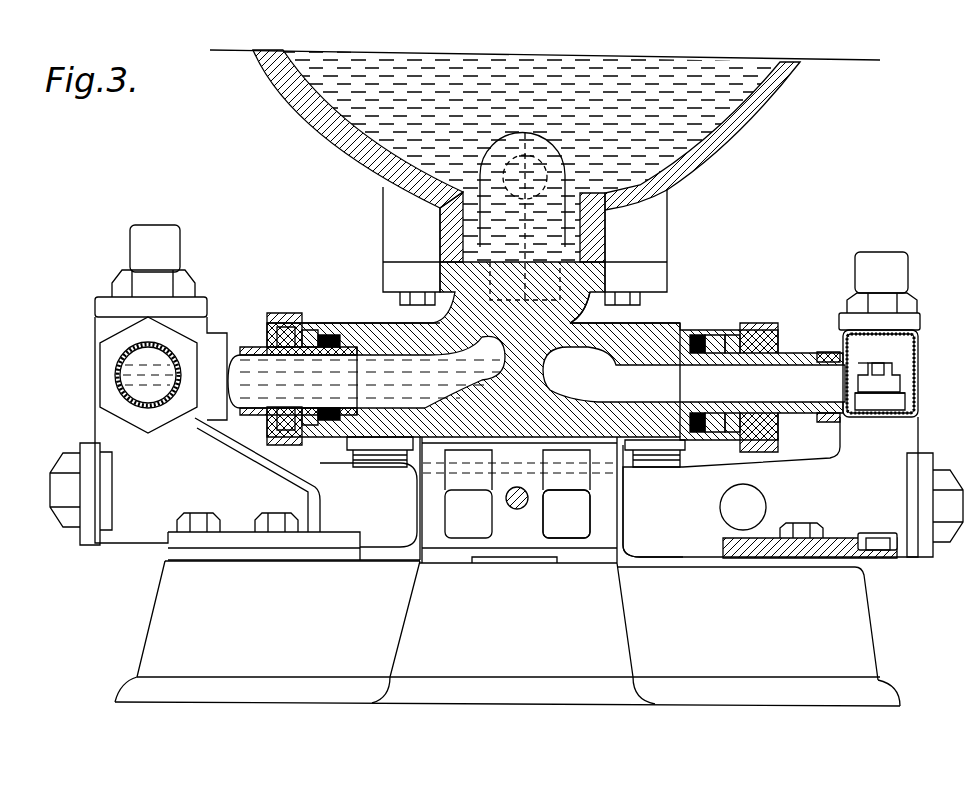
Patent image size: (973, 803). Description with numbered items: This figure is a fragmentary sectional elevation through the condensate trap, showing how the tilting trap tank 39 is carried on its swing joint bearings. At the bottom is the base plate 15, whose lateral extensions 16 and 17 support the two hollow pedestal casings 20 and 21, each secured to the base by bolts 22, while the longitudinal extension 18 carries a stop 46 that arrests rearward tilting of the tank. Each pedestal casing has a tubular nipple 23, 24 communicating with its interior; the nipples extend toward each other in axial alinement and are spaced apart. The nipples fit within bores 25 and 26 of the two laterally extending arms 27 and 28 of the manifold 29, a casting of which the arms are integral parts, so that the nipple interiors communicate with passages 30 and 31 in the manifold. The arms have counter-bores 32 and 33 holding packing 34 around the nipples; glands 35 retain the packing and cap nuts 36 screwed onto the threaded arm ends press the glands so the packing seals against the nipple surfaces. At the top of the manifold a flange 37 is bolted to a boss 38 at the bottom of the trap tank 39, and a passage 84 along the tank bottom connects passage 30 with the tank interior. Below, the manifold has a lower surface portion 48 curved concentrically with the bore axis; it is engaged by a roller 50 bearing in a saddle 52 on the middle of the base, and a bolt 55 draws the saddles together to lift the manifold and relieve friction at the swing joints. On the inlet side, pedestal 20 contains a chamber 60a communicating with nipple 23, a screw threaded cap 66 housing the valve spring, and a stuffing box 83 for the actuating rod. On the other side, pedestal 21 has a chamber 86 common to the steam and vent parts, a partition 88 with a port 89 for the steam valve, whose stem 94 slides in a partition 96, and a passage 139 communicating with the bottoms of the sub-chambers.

The base plate 15 is at (625, 690).
The lateral extension 16 is at (280, 667).
The lateral extension 17 is at (732, 667).
The longitudinal extension 18 is at (485, 665).
The hollow pedestal casing 20 is at (235, 489).
The hollow pedestal casing 21 is at (910, 410).
The bolts 22 is at (272, 518).
The nipple 23 is at (233, 356).
The nipple 24 is at (797, 358).
The bore 25 is at (335, 346).
The bore 26 is at (685, 362).
The arm 27 is at (380, 335).
The arm 28 is at (633, 342).
The manifold 29 is at (570, 291).
The passage 30 is at (445, 385).
The passage 31 is at (598, 387).
The counter-bore 32 is at (328, 336).
The counter-bore 33 is at (713, 338).
The packing 34 is at (312, 333).
The glands 35 is at (286, 327).
The cap nuts 36 is at (270, 316).
The flange 37 is at (655, 278).
The boss 38 is at (650, 218).
The trap tank 39 is at (757, 120).
The stop 46 is at (485, 565).
The lower surface portion 48 is at (510, 438).
The roller 50 is at (571, 476).
The saddle 52 is at (610, 526).
The bolt 55 is at (517, 510).
The chamber 60a is at (135, 375).
The cap 66 is at (177, 246).
The stuffing box 83 is at (358, 462).
The passage 84 is at (411, 246).
The chamber 86 is at (903, 350).
The partition 88 is at (905, 374).
The port 89 is at (858, 366).
The valve stem 94 is at (878, 366).
The partition 96 is at (885, 405).
The passage 139 is at (873, 536).